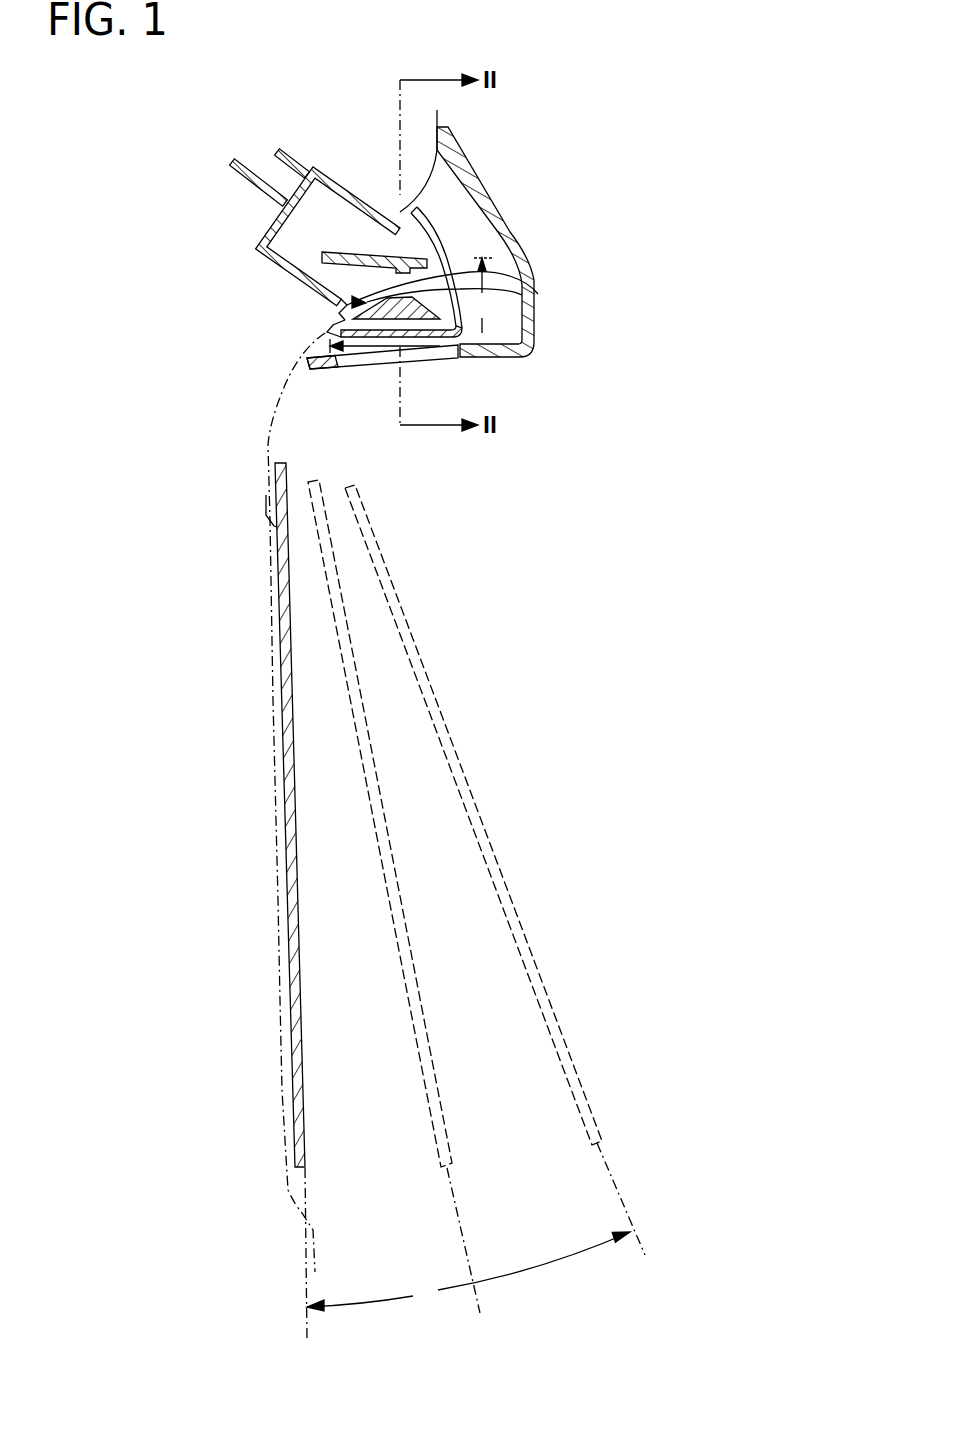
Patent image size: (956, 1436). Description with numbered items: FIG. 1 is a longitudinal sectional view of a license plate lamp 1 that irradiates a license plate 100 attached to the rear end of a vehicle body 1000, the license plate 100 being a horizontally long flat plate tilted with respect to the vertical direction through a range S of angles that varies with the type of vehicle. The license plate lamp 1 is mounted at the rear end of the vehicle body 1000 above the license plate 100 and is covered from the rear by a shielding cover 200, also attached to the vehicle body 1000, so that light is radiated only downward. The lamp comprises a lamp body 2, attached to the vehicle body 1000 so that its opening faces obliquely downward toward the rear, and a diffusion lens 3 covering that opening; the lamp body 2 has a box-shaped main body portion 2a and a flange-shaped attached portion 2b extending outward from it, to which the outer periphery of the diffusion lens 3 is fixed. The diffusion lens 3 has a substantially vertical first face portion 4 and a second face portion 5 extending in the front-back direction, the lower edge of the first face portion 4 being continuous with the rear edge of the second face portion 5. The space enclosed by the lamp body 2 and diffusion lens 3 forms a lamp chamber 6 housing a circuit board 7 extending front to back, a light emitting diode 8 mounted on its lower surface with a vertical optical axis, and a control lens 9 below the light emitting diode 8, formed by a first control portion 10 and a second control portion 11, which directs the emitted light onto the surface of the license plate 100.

The license plate lamp 1 is at (333, 197).
The lamp body 2 is at (267, 246).
The main body portion 2a is at (320, 264).
The attached portion 2b is at (403, 210).
The diffusion lens 3 is at (440, 258).
The first face portion 4 is at (505, 205).
The second face portion 5 is at (443, 357).
The lamp chamber 6 is at (330, 224).
The circuit board 7 is at (398, 273).
The light emitting diode 8 is at (327, 326).
The control lens 9 is at (538, 294).
The first control portion 10 is at (318, 330).
The second control portion 11 is at (513, 273).
The range S is at (483, 295).
The license plate 100 is at (296, 1066).
The shielding cover 200 is at (530, 240).
The vehicle body 1000 is at (275, 420).